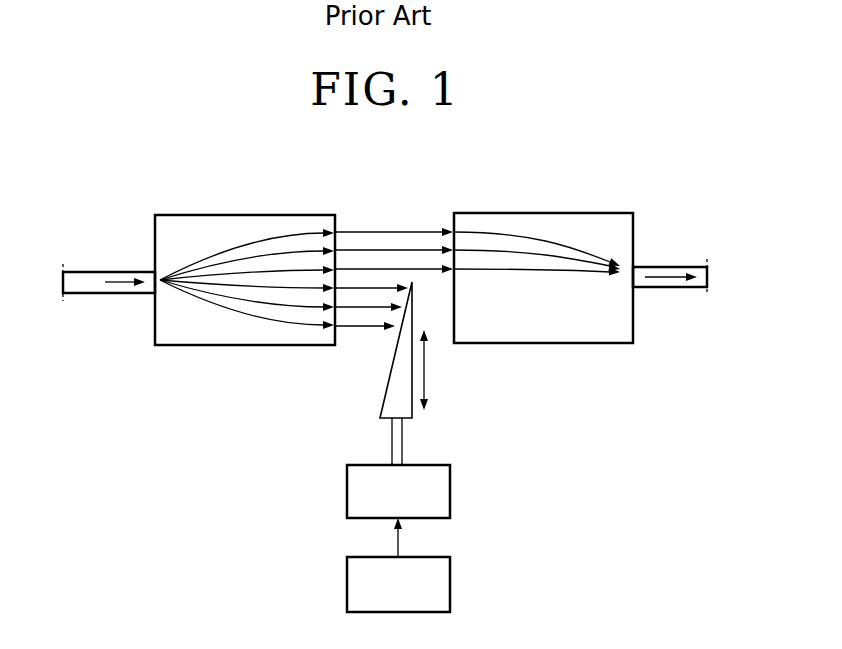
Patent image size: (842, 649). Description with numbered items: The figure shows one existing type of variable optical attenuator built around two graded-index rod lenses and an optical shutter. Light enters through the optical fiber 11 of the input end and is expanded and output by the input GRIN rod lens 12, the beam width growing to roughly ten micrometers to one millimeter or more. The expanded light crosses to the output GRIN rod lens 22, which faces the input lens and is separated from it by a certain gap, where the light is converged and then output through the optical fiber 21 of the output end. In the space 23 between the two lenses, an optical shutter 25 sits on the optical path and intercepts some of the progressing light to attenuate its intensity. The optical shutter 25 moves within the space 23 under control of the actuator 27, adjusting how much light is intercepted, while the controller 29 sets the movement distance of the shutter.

The optical fiber of the input end 11 is at (100, 270).
The input GRIN rod lens 12 is at (208, 347).
The optical fiber of the output end 21 is at (677, 265).
The output GRIN rod lens 22 is at (558, 345).
The space 23 is at (338, 210).
The optical shutter 25 is at (388, 378).
The actuator 27 is at (452, 492).
The controller 29 is at (452, 583).